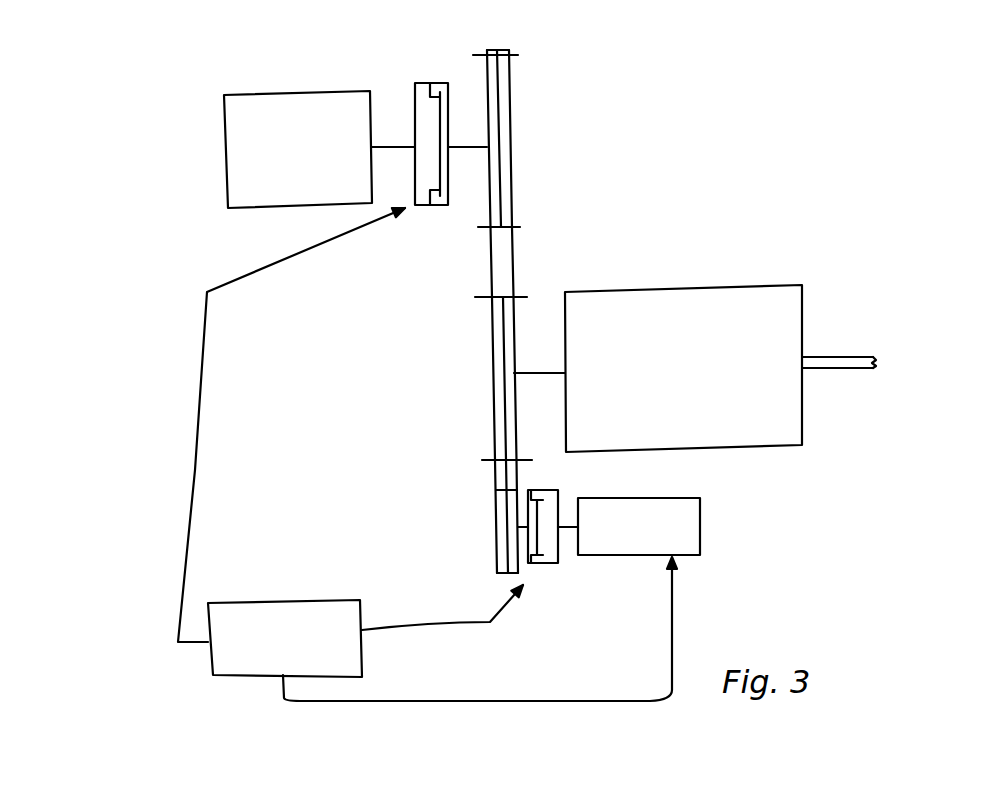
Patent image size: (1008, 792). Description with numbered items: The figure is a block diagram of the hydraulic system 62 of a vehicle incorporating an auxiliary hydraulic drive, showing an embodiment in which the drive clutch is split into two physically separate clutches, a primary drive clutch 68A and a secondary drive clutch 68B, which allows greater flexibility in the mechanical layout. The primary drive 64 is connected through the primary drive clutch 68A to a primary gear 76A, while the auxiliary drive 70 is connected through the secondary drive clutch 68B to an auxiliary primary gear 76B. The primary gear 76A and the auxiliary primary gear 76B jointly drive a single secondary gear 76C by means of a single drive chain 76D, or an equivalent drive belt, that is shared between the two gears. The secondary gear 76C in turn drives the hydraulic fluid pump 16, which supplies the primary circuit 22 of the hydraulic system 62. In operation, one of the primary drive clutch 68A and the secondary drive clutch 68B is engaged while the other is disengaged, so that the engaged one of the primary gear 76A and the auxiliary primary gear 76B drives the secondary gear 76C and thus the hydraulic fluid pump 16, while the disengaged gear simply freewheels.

The hydraulic system 62 is at (68, 167).
The primary drive 64 is at (224, 152).
The primary drive clutch 68A is at (440, 22).
The primary gear 76A is at (517, 125).
The drive chain 76D is at (490, 268).
The secondary gear 76C is at (488, 377).
The auxiliary primary gear 76B is at (485, 523).
The hydraulic fluid pump 16 is at (725, 248).
The primary circuit 22 is at (865, 315).
The secondary drive clutch 68B is at (545, 572).
The auxiliary drive 70 is at (700, 532).